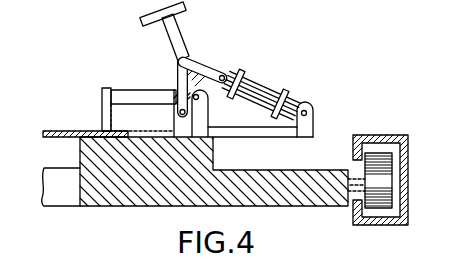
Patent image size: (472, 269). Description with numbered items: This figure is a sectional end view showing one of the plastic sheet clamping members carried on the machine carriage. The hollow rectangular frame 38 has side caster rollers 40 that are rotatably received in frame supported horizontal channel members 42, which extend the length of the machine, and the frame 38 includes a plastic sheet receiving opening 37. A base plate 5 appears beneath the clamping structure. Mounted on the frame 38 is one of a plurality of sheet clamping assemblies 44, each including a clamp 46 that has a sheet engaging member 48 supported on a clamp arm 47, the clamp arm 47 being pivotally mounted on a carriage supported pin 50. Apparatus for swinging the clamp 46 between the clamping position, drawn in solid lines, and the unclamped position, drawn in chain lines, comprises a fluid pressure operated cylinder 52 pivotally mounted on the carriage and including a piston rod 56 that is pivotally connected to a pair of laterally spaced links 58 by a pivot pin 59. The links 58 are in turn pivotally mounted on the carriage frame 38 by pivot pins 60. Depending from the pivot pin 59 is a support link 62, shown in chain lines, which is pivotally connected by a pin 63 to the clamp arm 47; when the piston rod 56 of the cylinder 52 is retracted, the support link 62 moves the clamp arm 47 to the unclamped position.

The base plate 5 is at (62, 139).
The plastic sheet receiving opening 37 is at (80, 190).
The frame 38 is at (270, 206).
The side caster rollers 40 is at (388, 175).
The channel members 42 is at (396, 180).
The sheet clamping assembly 44 is at (242, 69).
The clamp 46 is at (165, 94).
The clamp arm 47 is at (130, 96).
The sheet engaging member 48 is at (102, 114).
The carriage supported pin 50 is at (280, 67).
The fluid pressure operated cylinder 52 is at (266, 93).
The piston rod 56 is at (200, 66).
The links 58 is at (172, 60).
The pivot pin 59 is at (185, 58).
The pivot pins 60 is at (208, 111).
The support link 62 is at (176, 90).
The pin 63 is at (176, 100).